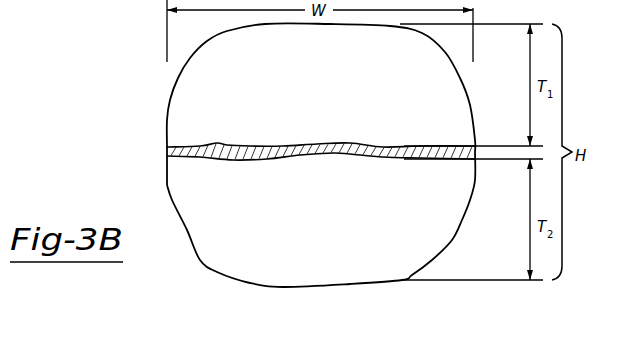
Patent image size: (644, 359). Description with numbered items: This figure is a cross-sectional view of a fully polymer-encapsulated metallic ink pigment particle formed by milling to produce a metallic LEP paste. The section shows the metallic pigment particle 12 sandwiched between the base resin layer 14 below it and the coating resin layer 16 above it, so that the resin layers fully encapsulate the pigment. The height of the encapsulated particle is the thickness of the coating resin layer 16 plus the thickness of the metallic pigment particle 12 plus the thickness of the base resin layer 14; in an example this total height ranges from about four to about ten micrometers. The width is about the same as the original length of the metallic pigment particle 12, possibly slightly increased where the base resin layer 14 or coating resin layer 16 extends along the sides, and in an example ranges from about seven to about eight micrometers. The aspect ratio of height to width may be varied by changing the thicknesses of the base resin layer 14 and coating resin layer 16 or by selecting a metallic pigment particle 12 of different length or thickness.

The metallic pigment particle 12 is at (187, 154).
The base resin layer 14 is at (333, 270).
The coating resin layer 16 is at (185, 105).